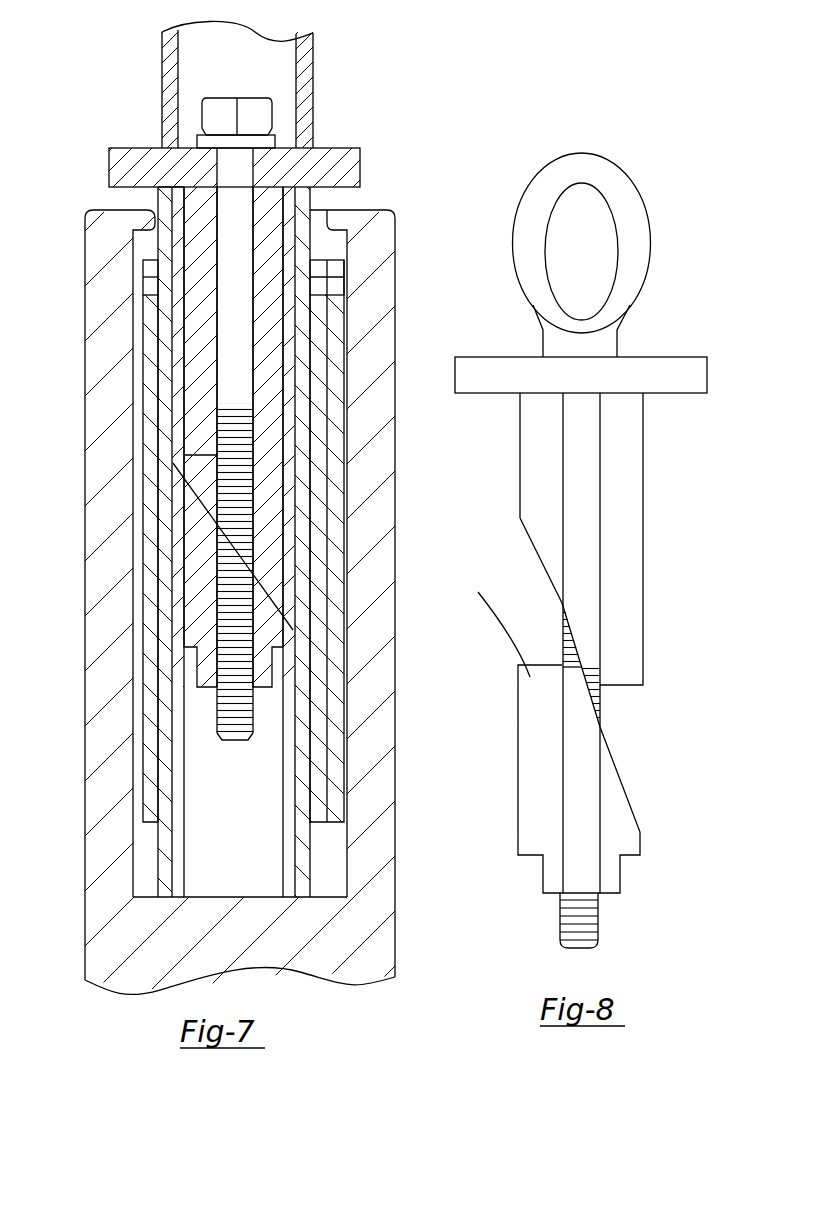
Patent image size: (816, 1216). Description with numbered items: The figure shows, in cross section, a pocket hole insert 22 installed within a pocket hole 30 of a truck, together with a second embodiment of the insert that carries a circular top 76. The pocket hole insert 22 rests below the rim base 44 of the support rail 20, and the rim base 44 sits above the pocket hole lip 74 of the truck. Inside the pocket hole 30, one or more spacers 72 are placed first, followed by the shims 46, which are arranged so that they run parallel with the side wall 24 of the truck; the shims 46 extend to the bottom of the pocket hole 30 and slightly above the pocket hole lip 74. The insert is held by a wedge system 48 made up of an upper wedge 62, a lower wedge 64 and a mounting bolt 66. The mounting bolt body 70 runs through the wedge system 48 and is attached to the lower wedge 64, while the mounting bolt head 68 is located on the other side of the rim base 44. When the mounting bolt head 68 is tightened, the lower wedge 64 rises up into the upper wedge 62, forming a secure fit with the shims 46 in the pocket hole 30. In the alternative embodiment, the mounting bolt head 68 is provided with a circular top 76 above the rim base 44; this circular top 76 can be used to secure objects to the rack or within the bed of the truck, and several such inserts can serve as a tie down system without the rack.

In FIG. 7, the support rail 20 is at (310, 68).
In FIG. 7, the pocket hole insert 22 is at (318, 200).
In FIG. 8, the pocket hole insert 22 is at (642, 948).
In FIG. 7, the side wall 24 is at (85, 300).
In FIG. 7, the pocket hole 30 is at (330, 245).
In FIG. 7, the rim base 44 is at (360, 153).
In FIG. 8, the rim base 44 is at (581, 375).
In FIG. 7, the shims 46 is at (157, 852).
In FIG. 8, the wedge system 48 is at (548, 552).
In FIG. 7, the upper wedge 62 is at (300, 325).
In FIG. 7, the lower wedge 64 is at (213, 587).
In FIG. 7, the mounting bolt 66 is at (222, 300).
In FIG. 7, the mounting bolt head 68 is at (248, 100).
In FIG. 8, the mounting bolt head 68 is at (529, 183).
In FIG. 7, the mounting bolt body 70 is at (223, 743).
In FIG. 7, the spacers 72 is at (158, 440).
In FIG. 7, the pocket hole lip 74 is at (155, 203).
In FIG. 8, the circular top 76 is at (608, 162).